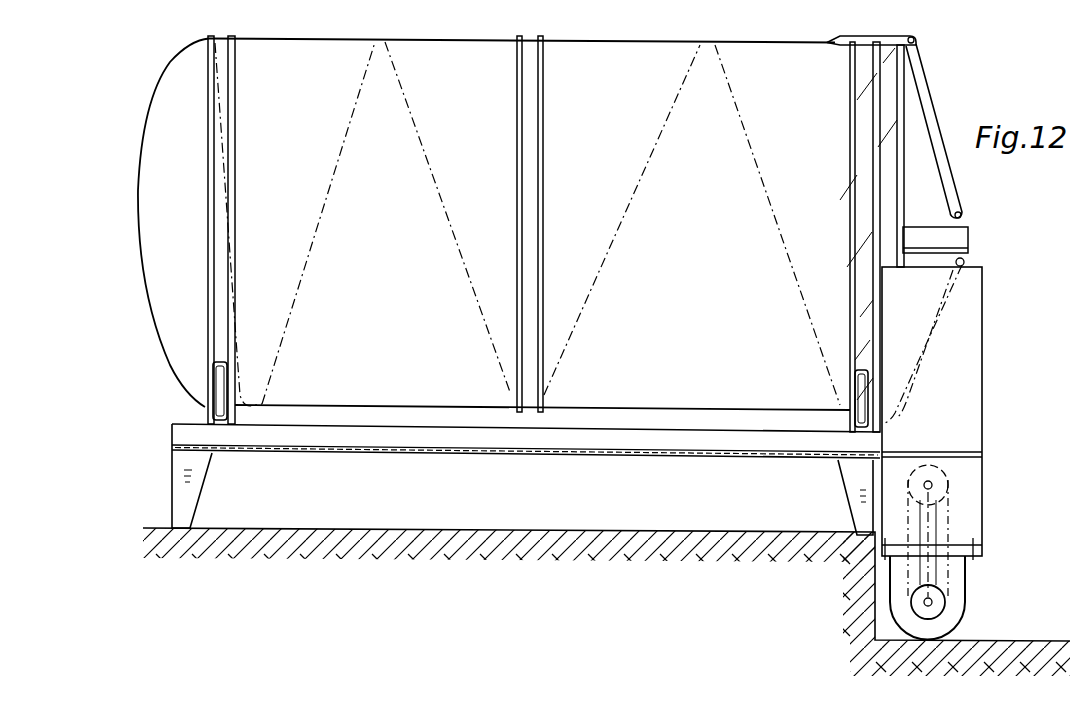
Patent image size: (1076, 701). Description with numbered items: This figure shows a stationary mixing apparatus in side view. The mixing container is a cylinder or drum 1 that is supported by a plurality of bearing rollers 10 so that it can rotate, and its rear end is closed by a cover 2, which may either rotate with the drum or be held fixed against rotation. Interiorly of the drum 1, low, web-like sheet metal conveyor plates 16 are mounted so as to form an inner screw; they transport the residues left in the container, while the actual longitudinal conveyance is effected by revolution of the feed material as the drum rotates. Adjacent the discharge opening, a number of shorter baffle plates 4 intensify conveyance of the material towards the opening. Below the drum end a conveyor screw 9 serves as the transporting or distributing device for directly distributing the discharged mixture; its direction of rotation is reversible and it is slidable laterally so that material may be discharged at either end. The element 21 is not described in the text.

The drum 1 is at (632, 72).
The cover 2 is at (903, 70).
The baffle plates 4 is at (837, 130).
The conveyor screw 9 is at (935, 612).
The bearing rollers 10 is at (218, 377).
The conveyor plates 16 is at (406, 61).
The column housing 21 is at (963, 357).